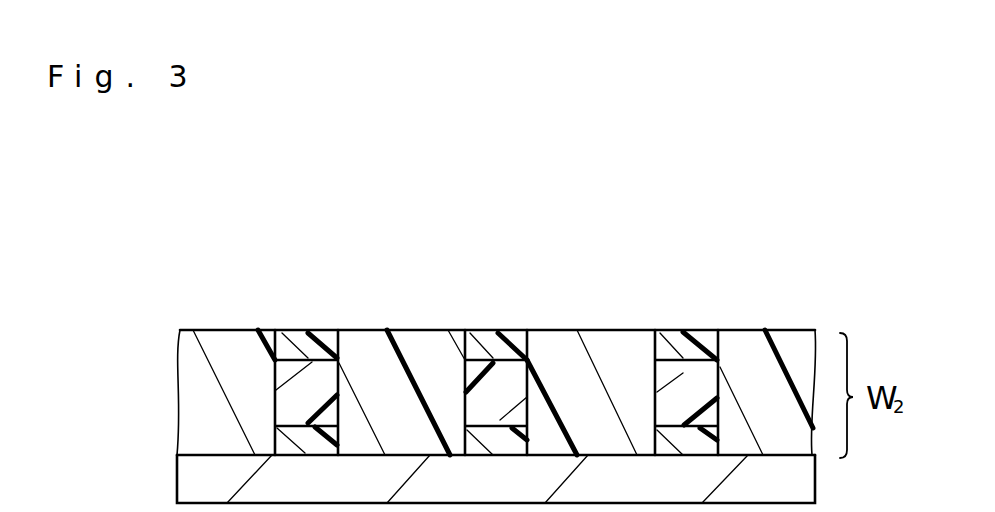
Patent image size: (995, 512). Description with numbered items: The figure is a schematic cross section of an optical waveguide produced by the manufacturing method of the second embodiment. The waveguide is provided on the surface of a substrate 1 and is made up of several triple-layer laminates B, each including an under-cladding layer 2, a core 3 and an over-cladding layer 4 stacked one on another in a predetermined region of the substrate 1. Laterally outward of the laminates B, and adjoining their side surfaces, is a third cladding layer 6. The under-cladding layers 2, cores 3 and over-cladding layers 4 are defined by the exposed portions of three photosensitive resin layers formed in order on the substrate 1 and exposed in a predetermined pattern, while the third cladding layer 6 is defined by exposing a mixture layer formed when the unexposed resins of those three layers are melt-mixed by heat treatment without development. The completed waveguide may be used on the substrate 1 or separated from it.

The substrate 1 is at (798, 492).
The under-cladding layer 2 is at (685, 437).
The core 3 is at (678, 380).
The over-cladding layer 4 is at (695, 352).
The third cladding layer 6 is at (797, 357).
The triple-layer laminate B is at (355, 243).